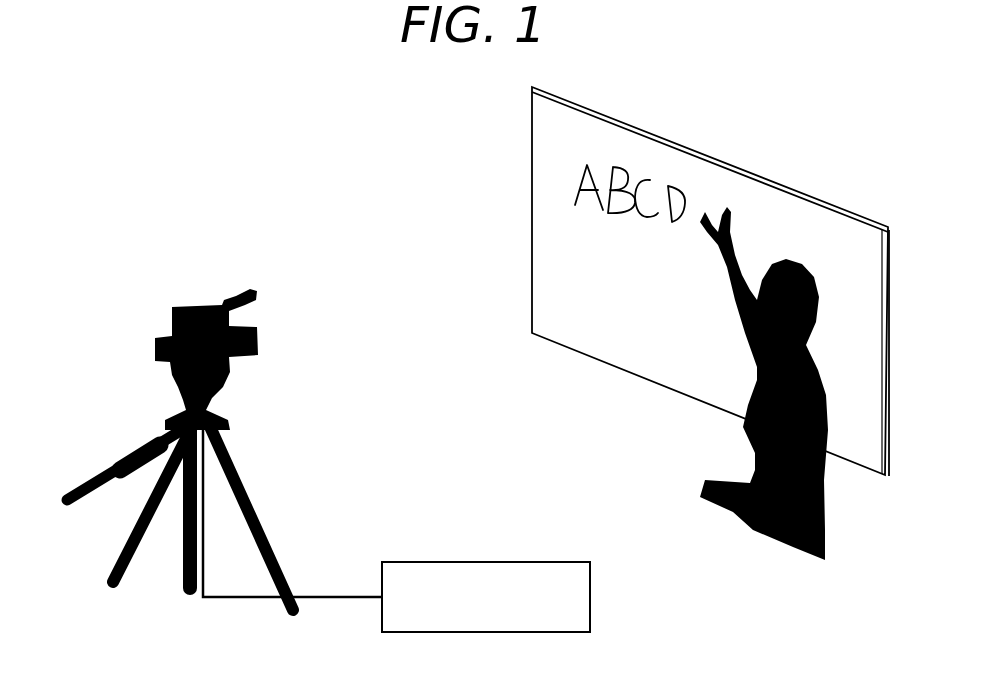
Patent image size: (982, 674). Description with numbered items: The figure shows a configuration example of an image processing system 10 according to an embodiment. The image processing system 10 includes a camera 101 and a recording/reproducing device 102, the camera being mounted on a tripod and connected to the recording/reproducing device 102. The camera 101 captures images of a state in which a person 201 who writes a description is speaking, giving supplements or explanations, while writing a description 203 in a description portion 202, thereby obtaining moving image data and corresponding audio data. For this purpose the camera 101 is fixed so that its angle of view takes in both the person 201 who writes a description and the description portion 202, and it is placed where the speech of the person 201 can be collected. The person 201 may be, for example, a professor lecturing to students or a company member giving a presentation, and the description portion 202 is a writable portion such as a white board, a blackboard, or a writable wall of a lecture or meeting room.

The image processing system 10 is at (368, 418).
The camera 101 is at (165, 332).
The recording/reproducing device 102 is at (487, 562).
The person who writes a description 201 is at (757, 530).
The description portion 202 is at (820, 233).
The description 203 is at (575, 198).